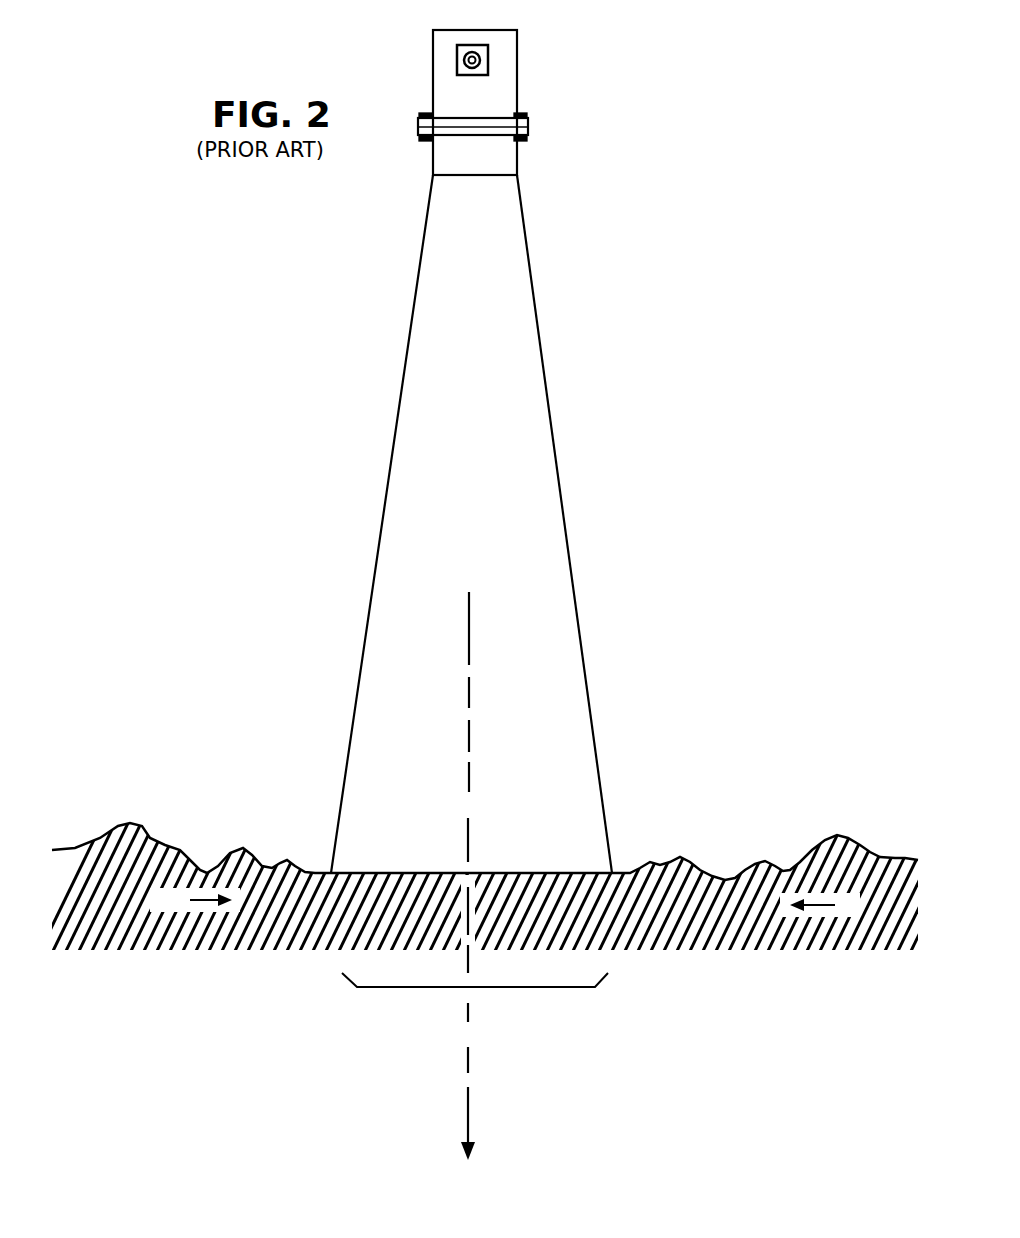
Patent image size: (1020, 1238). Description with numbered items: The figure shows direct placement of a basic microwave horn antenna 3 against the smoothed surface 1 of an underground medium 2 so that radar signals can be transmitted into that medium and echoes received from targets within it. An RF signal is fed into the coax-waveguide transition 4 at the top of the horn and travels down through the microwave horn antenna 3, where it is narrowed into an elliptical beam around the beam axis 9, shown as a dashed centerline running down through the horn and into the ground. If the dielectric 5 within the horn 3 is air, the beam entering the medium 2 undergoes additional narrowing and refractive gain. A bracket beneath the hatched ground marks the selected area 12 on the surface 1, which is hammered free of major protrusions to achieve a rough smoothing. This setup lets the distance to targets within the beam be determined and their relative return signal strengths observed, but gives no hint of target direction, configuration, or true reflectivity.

The smoothed surface 1 is at (763, 862).
The underground medium 2 is at (508, 905).
The microwave horn antenna 3 is at (545, 402).
The coax-waveguide transition 4 is at (517, 78).
The dielectric 5 is at (515, 538).
The beam axis 9 is at (469, 665).
The selected area 12 is at (497, 987).